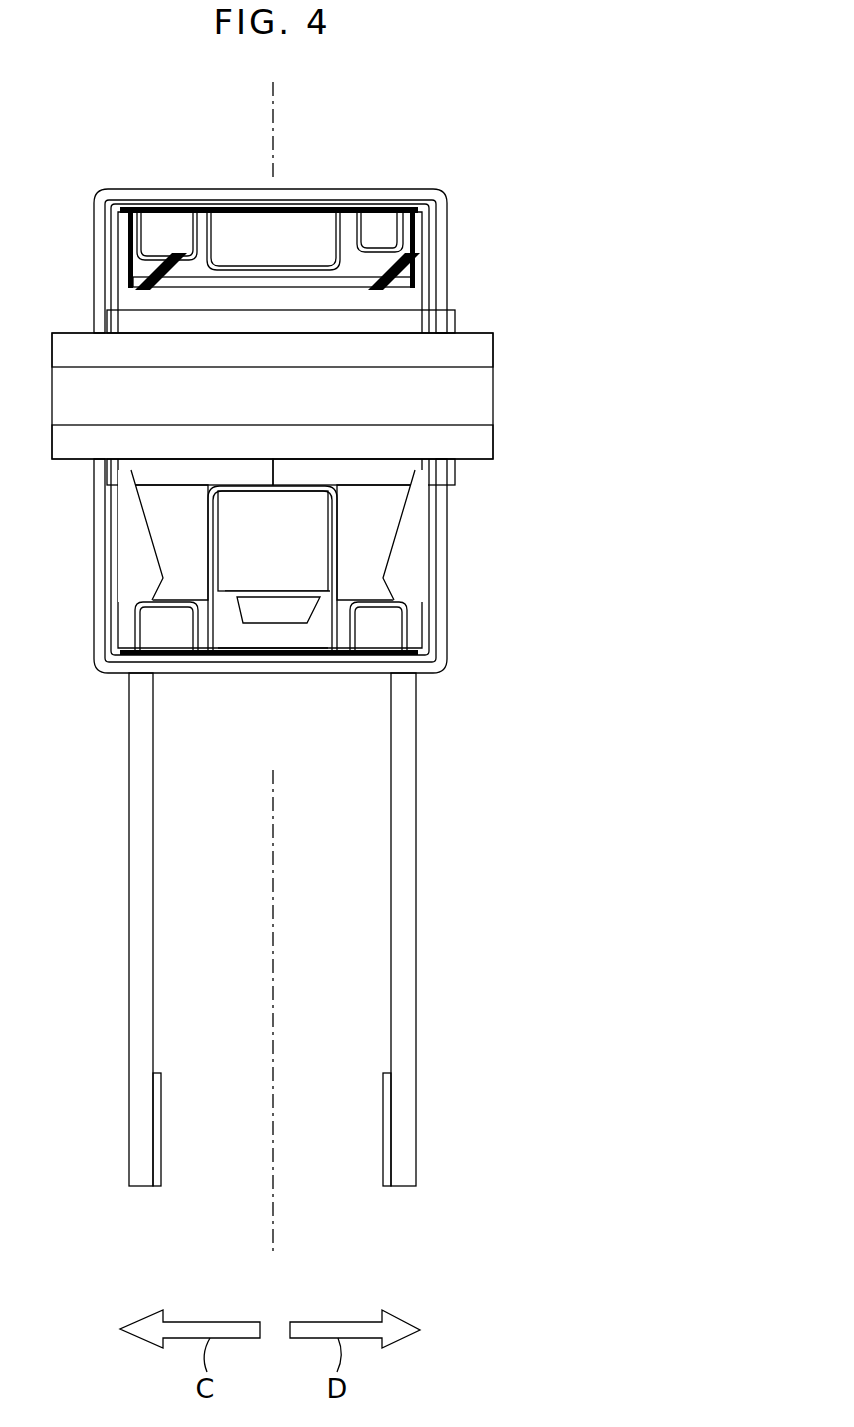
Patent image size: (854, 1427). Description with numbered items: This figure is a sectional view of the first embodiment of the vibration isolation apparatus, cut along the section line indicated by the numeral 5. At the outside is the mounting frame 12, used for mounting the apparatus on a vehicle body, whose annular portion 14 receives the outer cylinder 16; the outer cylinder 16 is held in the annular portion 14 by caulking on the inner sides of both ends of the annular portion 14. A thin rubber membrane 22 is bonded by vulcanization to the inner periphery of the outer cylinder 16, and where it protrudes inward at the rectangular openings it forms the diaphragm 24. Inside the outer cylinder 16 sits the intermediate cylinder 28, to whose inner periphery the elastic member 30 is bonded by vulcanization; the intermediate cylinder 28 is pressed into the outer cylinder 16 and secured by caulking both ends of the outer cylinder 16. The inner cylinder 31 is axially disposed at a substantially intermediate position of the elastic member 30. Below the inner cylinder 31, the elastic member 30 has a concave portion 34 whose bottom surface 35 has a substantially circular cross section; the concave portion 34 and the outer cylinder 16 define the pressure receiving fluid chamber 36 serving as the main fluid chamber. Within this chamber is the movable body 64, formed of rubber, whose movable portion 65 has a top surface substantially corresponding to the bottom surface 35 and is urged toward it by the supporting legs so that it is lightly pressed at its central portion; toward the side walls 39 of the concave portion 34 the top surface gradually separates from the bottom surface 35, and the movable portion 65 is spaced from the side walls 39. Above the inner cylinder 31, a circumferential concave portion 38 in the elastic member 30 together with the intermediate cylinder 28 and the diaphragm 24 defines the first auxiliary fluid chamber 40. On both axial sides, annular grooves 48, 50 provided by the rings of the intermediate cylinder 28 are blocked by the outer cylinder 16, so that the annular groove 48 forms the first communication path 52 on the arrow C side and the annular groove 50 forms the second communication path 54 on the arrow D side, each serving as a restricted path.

The section line 5- 5 is at (278, 92).
The mounting frame 12 is at (418, 768).
The annular portion 14 is at (437, 190).
The outer cylinder 16 is at (367, 203).
The thin rubber membrane 22 is at (213, 217).
The diaphragm 24 is at (316, 228).
The intermediate cylinder 28 is at (420, 228).
The elastic member 30 is at (400, 279).
The inner cylinder 31 is at (495, 356).
The concave portion 34 is at (214, 616).
The bottom surface 35 is at (330, 525).
The pressure receiving fluid chamber 36 is at (285, 637).
The concave portion 38 is at (292, 258).
The side walls 39 is at (217, 650).
The first auxiliary fluid chamber 40 is at (258, 237).
The annular groove 48 is at (170, 250).
The annular groove 50 is at (408, 223).
The first communication path 52 is at (160, 223).
The second communication path 54 is at (380, 227).
The movable body 64 is at (236, 638).
The movable portion 65 is at (312, 568).